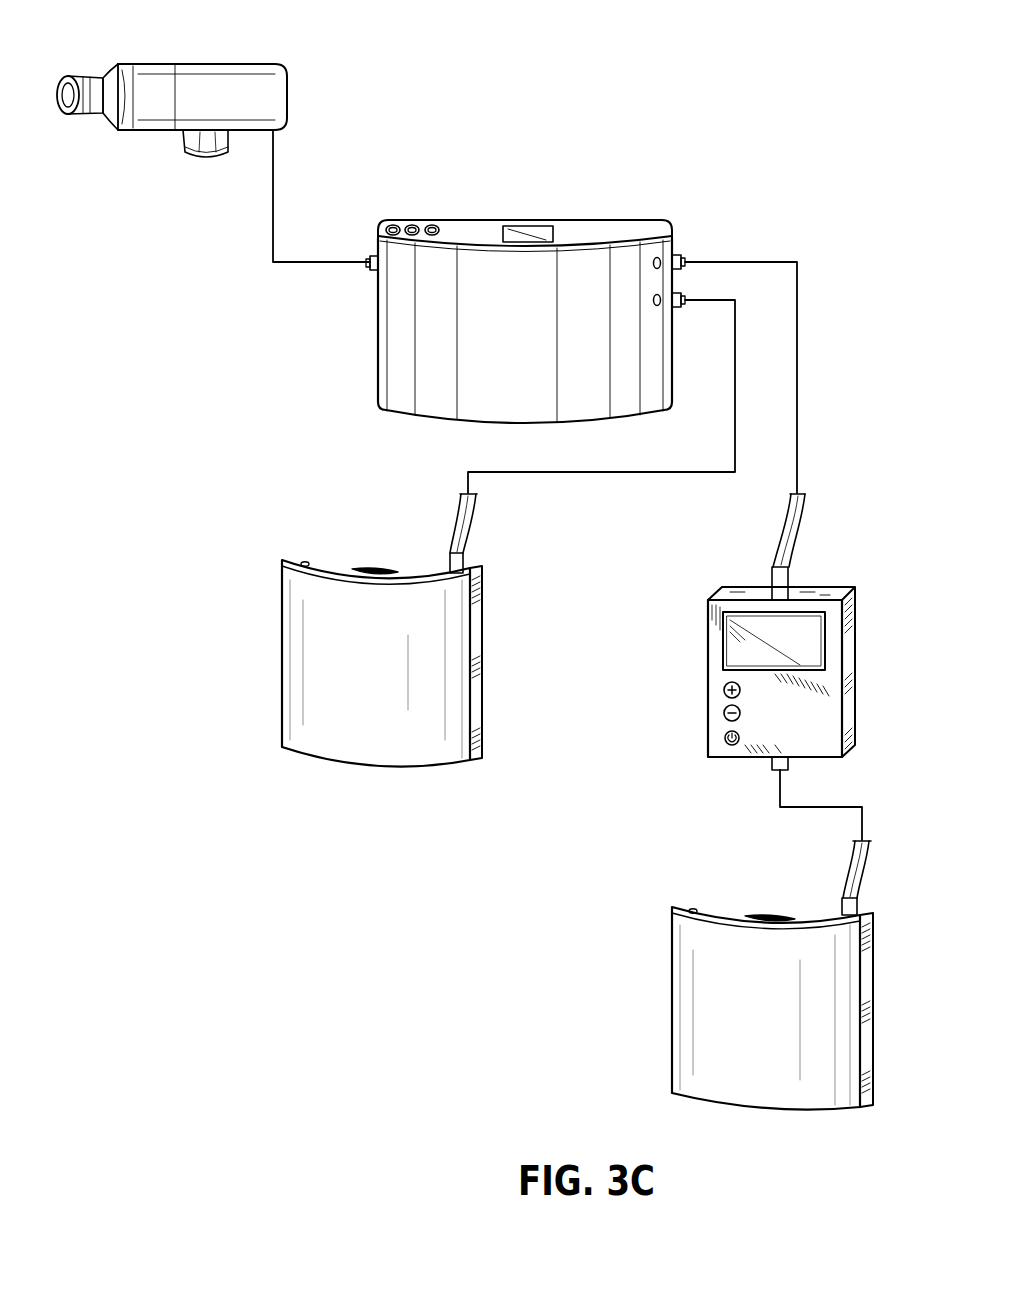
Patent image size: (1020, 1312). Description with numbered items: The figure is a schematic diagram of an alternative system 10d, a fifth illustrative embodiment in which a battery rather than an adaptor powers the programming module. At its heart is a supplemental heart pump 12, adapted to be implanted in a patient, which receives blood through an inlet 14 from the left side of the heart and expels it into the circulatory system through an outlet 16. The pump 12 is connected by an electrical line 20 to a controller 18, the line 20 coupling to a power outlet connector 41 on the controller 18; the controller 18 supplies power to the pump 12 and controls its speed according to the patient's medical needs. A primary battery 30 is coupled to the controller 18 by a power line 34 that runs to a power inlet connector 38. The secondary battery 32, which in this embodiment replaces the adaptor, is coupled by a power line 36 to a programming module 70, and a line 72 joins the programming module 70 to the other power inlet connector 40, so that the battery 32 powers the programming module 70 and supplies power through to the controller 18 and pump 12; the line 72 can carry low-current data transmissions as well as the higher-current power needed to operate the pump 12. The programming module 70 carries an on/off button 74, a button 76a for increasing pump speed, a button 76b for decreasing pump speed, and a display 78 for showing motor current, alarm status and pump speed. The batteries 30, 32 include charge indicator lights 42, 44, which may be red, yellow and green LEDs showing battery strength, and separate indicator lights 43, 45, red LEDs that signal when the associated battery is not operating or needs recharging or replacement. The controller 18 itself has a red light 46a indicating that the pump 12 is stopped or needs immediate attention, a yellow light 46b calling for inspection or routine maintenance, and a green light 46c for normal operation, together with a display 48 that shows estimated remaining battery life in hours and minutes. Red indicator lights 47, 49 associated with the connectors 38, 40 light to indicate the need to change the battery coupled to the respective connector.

The alternative system 10d is at (745, 101).
The supplemental heart pump 12 is at (148, 63).
The inlet 14 is at (63, 77).
The outlet 16 is at (200, 160).
The controller 18 is at (621, 223).
The electrical line 20 is at (274, 180).
The primary battery 30 is at (282, 673).
The secondary battery 32 is at (671, 969).
The power line 34 is at (628, 478).
The power line 36 is at (863, 818).
The power inlet connector 38 is at (684, 302).
The power inlet connector 40 is at (683, 262).
The power outlet connector 41 is at (368, 270).
The charge indicator light 42 is at (378, 567).
The indicator light 43 is at (302, 560).
The charge indicator light 44 is at (773, 913).
The indicator light 45 is at (690, 906).
The red indicator light 46a is at (391, 224).
The yellow indicator light 46b is at (412, 224).
The green indicator light 46c is at (456, 205).
The indicator light 47 is at (653, 301).
The display 48 is at (538, 224).
The indicator light 49 is at (653, 264).
The programming module 70 is at (857, 651).
The line 72 is at (795, 417).
The on/off button 74 is at (724, 740).
The increase button 76a is at (723, 690).
The decrease button 76b is at (723, 713).
The display 78 is at (730, 640).